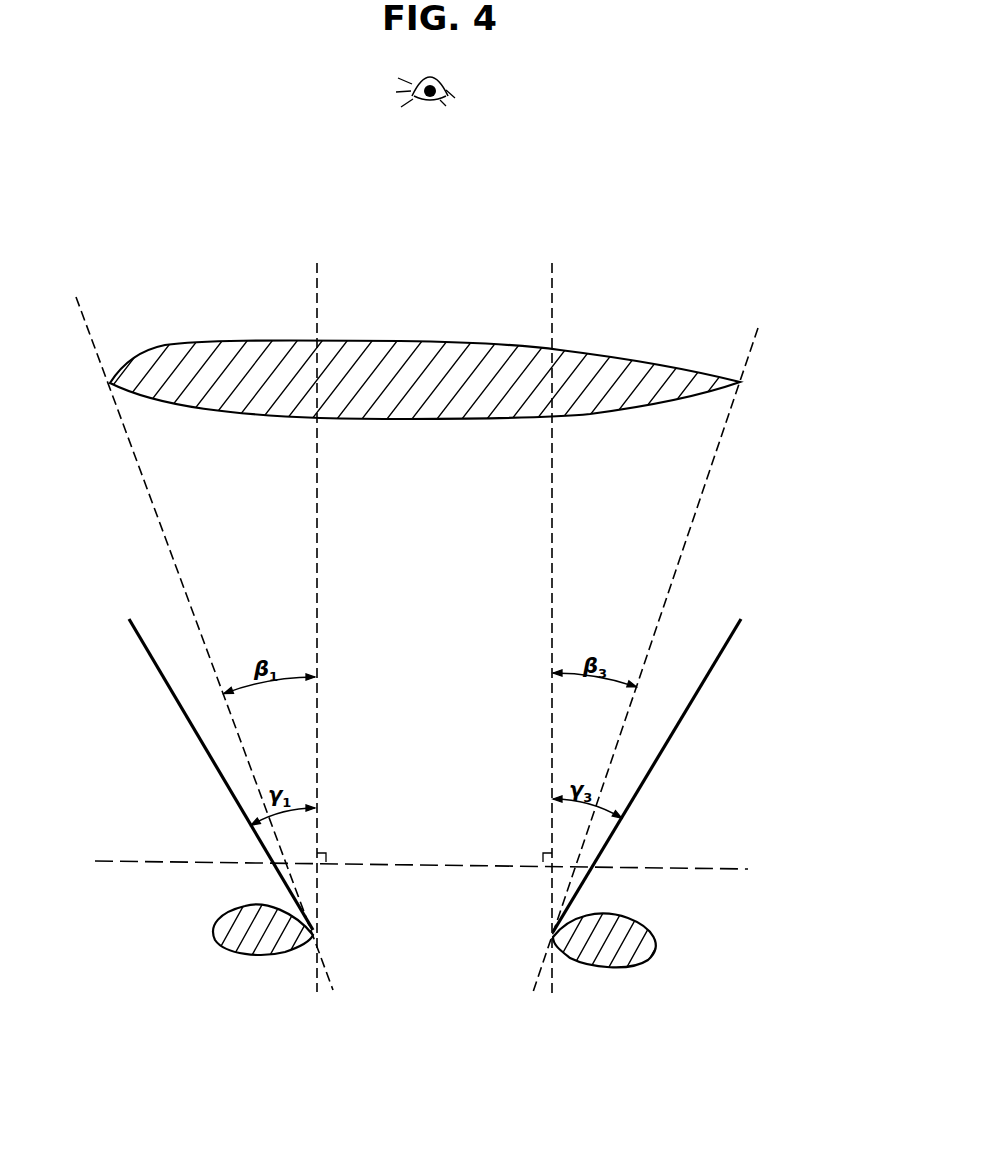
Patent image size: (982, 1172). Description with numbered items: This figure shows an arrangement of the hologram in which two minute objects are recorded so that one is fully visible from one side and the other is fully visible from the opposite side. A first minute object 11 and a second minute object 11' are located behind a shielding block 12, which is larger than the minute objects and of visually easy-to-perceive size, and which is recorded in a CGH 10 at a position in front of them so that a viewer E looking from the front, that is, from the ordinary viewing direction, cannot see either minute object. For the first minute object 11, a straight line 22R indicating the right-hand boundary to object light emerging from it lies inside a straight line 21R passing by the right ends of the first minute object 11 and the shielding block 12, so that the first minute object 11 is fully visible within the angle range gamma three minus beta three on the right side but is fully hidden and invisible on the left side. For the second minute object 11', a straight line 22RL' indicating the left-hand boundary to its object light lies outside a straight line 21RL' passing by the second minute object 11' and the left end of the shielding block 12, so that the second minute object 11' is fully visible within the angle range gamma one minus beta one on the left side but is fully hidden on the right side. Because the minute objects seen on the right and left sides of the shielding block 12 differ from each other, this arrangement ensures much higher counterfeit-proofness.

The viewer E is at (448, 84).
The shielding block 12 is at (575, 348).
The straight line 21RL' is at (204, 643).
The straight line 21R is at (714, 458).
The straight line 22RL' is at (191, 774).
The straight line 22R is at (711, 673).
The CGH 10 is at (684, 866).
The second minute object 11' is at (351, 952).
The first minute object 11 is at (650, 973).